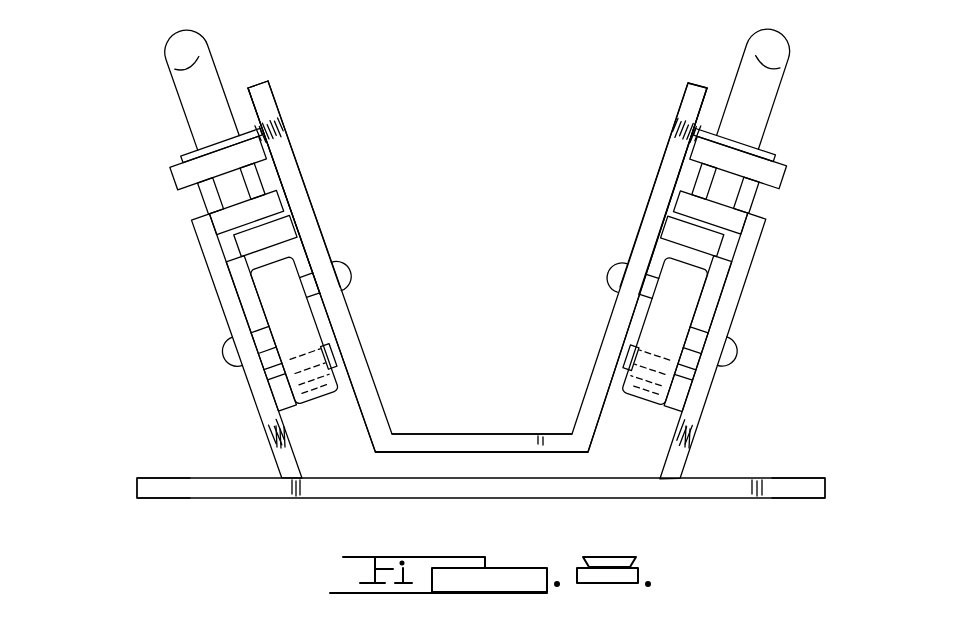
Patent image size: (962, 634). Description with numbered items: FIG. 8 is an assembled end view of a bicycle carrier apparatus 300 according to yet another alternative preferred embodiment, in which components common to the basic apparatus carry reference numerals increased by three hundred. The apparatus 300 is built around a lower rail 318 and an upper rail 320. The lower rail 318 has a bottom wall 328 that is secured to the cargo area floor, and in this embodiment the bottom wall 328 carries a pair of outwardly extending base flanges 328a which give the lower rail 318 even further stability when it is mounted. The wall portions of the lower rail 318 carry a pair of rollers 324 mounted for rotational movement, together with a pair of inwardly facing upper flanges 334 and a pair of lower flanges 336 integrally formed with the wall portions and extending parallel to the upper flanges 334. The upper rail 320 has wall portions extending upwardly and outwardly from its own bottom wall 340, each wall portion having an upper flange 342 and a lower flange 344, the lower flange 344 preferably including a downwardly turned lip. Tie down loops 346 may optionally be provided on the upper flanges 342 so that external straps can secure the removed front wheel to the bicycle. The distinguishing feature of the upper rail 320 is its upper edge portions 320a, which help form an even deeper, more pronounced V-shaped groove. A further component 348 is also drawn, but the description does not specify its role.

The apparatus 300 is at (392, 97).
The lower rail 318 is at (255, 431).
The upper rail 320 is at (312, 137).
The upper edge portions 320a is at (263, 86).
The rollers 324 is at (300, 374).
The bottom wall 328 is at (312, 493).
The base flanges 328a is at (189, 478).
The upper flanges 334 is at (228, 225).
The lower flanges 336 is at (300, 374).
The bottom wall 340 is at (477, 420).
The upper flange 342 is at (175, 162).
The lower flange 344 is at (233, 268).
The tie down loops 346 is at (171, 47).
The spacer block 348 is at (277, 230).